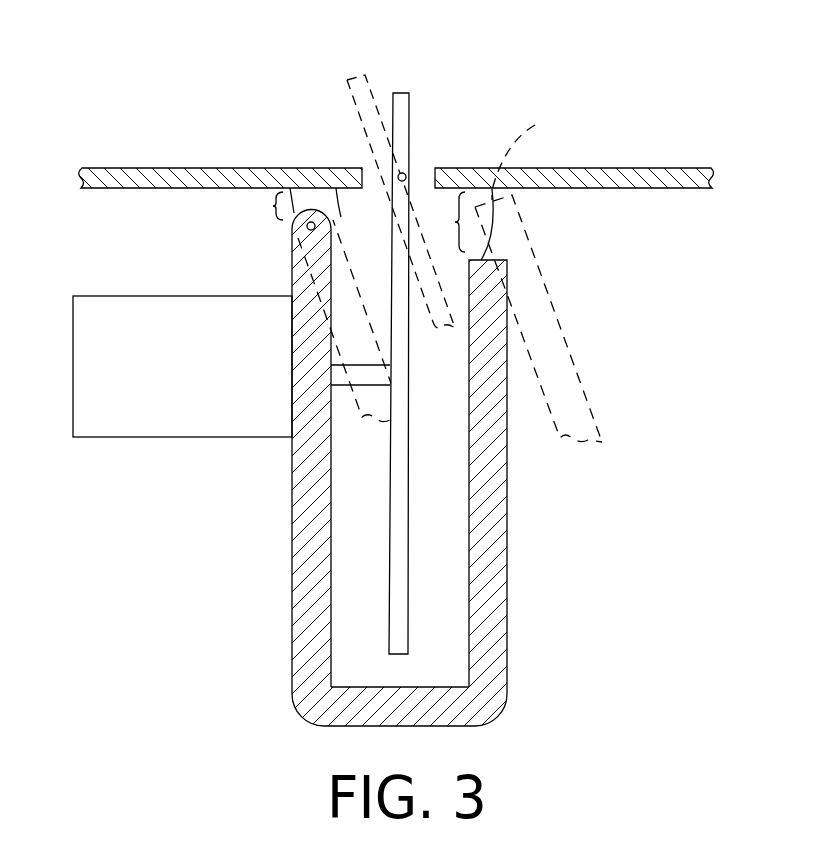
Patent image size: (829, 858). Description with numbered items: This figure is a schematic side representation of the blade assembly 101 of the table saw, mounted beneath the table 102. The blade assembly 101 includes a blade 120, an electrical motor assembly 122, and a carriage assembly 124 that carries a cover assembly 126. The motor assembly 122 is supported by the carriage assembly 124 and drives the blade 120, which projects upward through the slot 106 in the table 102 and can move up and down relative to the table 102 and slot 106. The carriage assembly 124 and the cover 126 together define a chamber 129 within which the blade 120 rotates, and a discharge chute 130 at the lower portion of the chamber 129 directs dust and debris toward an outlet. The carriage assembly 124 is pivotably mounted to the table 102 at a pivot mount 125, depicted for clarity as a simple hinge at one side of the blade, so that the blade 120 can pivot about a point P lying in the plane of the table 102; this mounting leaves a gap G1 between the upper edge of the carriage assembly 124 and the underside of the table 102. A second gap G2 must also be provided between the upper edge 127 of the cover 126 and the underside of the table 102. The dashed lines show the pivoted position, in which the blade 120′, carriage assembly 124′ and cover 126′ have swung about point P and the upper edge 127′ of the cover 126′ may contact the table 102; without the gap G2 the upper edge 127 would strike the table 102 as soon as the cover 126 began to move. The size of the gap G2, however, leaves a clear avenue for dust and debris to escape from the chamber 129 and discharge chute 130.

The blade assembly 101 is at (444, 82).
The table 102 is at (595, 170).
The slot 106 is at (436, 187).
The blade 120 is at (400, 93).
The blade (pivoted position) 120′ is at (347, 102).
The electrical motor assembly 122 is at (160, 415).
The carriage assembly 124 is at (323, 562).
The carriage assembly (pivoted position) 124′ is at (340, 298).
The pivot mount 125 is at (308, 229).
The cover assembly 126 is at (497, 515).
The cover assembly (pivoted position) 126′ is at (553, 323).
The upper edge of the cover 127 is at (492, 238).
The upper edge of the cover (pivoted position) 127′ is at (541, 151).
The chamber 129 is at (365, 462).
The discharge chute 130 is at (362, 627).
The pivot point P is at (398, 175).
The first gap G1 is at (273, 205).
The second gap G2 is at (441, 222).